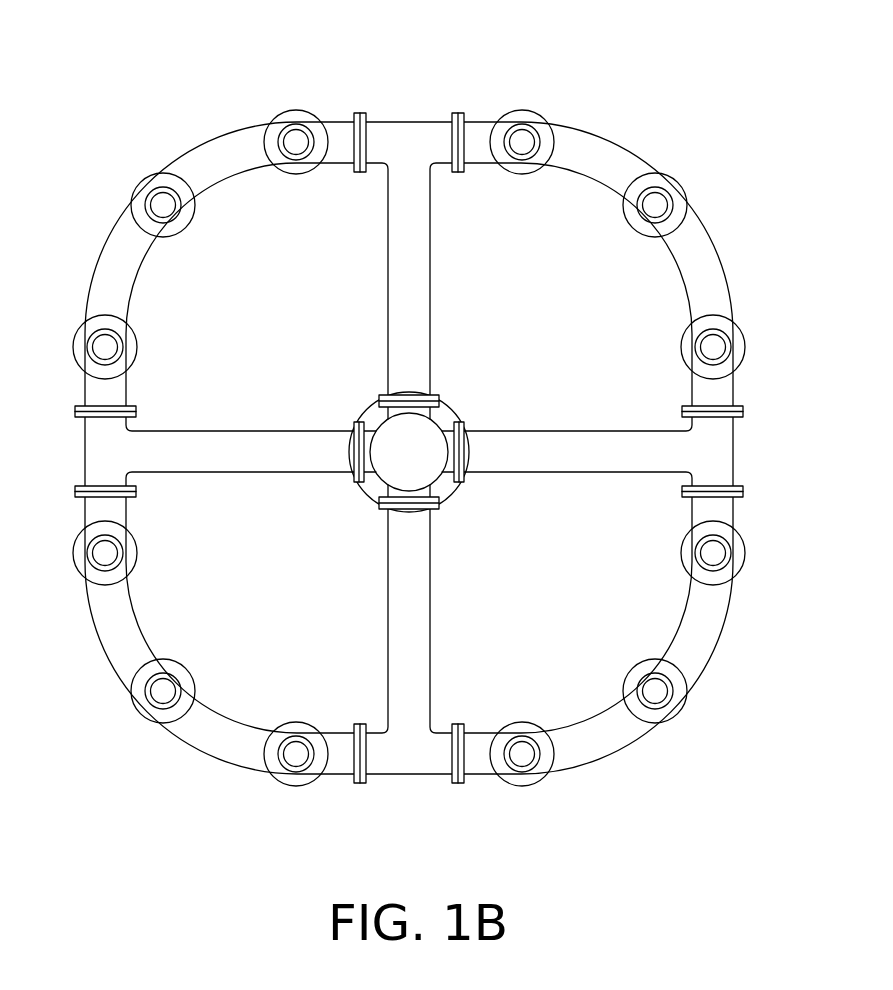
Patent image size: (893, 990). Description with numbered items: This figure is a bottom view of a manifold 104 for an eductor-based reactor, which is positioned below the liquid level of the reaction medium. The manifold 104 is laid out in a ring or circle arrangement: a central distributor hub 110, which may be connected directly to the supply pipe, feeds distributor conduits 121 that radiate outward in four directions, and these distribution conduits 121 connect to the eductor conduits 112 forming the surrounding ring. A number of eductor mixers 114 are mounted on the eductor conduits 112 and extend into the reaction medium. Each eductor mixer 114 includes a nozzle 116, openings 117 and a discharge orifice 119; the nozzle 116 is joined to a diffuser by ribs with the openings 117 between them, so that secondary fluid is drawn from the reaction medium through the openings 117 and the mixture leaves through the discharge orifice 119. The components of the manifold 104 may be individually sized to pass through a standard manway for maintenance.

The manifold 104 is at (385, 400).
The distributor hub 110 is at (435, 420).
The eductor conduits 112 is at (384, 448).
The eductor mixers 114 is at (188, 201).
The nozzle 116 is at (165, 205).
The openings 117 is at (182, 205).
The discharge orifice 119 is at (185, 226).
The distributor conduits 121 is at (413, 285).